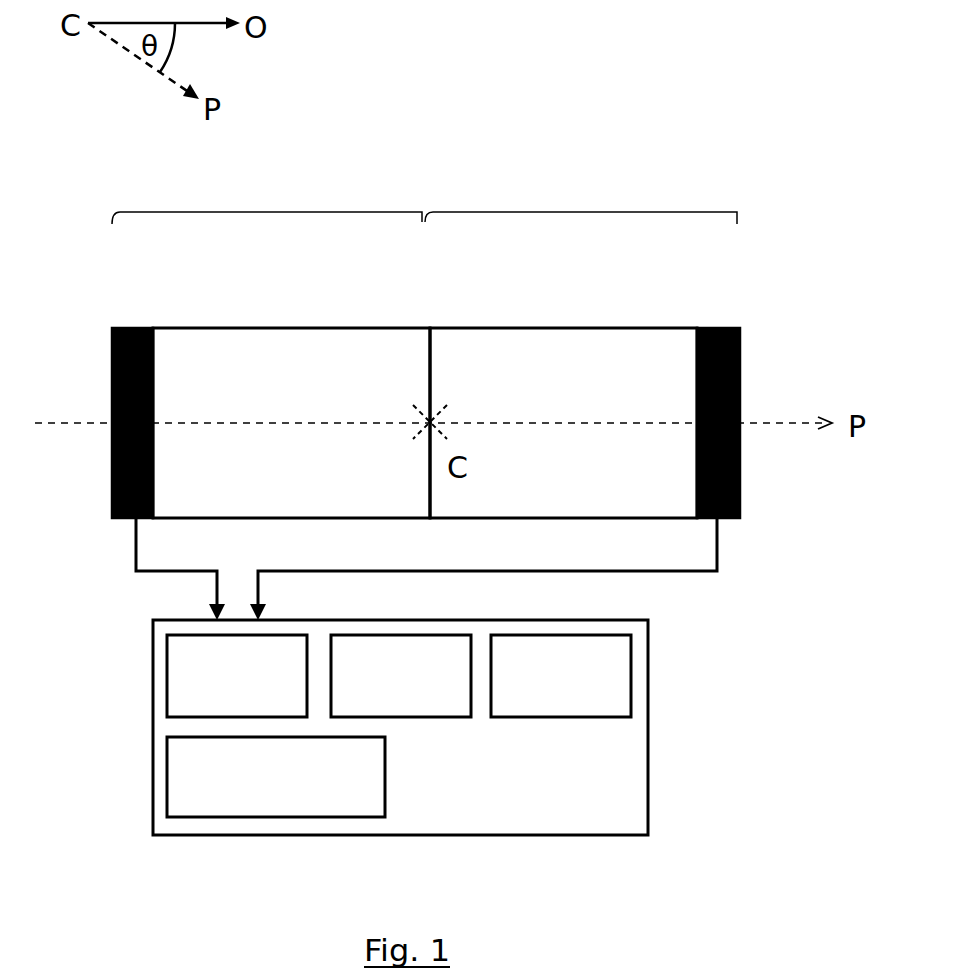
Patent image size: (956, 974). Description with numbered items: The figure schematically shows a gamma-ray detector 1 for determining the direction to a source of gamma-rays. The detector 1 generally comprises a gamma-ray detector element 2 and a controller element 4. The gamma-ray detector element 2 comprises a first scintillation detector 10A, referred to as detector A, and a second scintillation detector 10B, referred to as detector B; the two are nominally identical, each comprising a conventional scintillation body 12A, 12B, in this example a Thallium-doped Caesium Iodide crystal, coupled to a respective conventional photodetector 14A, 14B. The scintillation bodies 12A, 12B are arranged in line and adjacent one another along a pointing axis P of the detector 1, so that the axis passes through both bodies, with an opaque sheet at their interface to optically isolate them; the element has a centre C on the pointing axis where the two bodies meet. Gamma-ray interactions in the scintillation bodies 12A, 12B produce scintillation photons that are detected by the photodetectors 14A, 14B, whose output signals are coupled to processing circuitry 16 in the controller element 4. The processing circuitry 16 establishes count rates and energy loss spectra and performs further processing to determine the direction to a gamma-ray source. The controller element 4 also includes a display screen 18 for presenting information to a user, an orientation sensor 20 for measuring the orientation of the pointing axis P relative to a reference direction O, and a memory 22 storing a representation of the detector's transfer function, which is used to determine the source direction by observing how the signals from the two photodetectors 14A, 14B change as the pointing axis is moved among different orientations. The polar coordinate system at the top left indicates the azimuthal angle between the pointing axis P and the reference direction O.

The gamma-ray detector 1 is at (596, 89).
The gamma-ray detector element 2 is at (90, 521).
The controller element 4 is at (104, 710).
The first scintillation detector 10A is at (620, 194).
The second scintillation detector 10B is at (302, 194).
The scintillation body 12A is at (532, 327).
The scintillation body 12B is at (287, 327).
The photodetector 14A is at (715, 327).
The photodetector 14B is at (130, 327).
The processing circuitry 16 is at (215, 783).
The display screen 18 is at (215, 681).
The orientation sensor 20 is at (380, 681).
The memory 22 is at (540, 681).